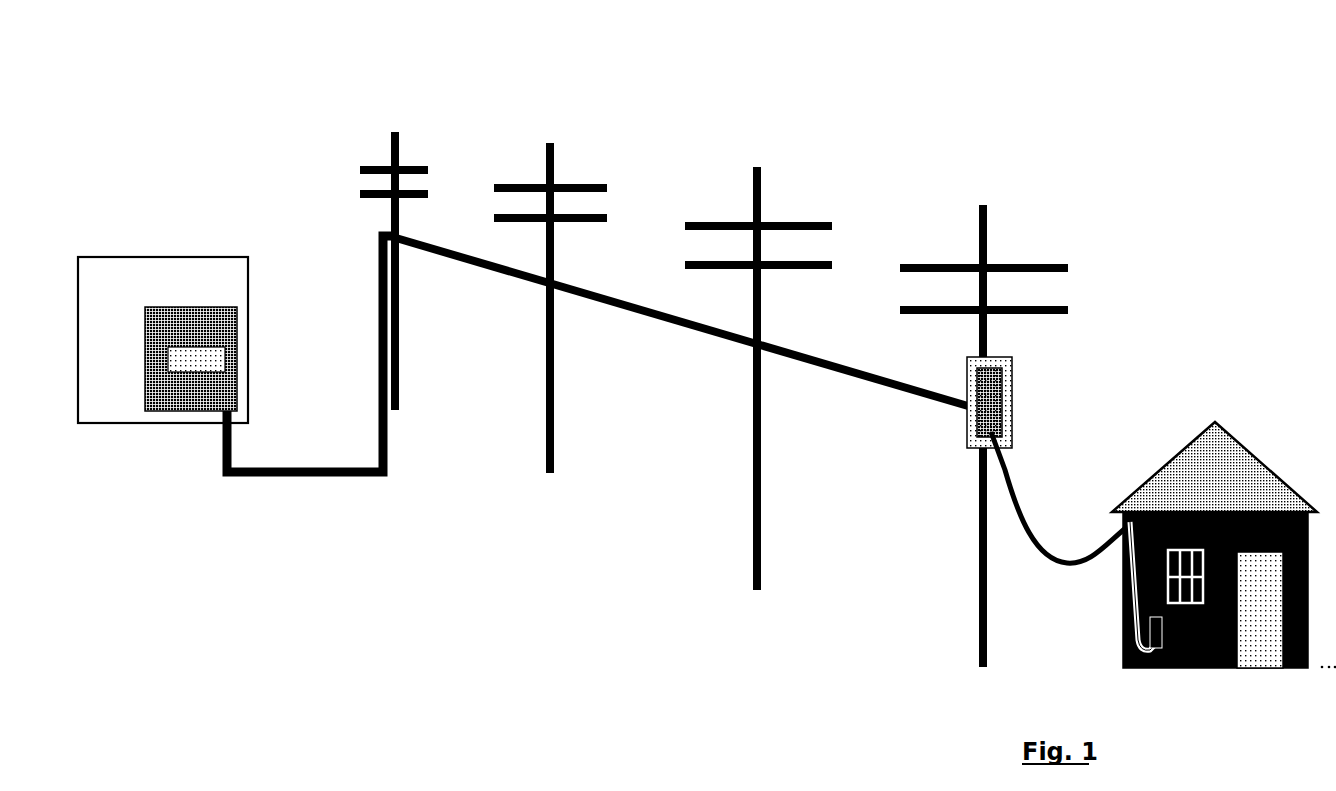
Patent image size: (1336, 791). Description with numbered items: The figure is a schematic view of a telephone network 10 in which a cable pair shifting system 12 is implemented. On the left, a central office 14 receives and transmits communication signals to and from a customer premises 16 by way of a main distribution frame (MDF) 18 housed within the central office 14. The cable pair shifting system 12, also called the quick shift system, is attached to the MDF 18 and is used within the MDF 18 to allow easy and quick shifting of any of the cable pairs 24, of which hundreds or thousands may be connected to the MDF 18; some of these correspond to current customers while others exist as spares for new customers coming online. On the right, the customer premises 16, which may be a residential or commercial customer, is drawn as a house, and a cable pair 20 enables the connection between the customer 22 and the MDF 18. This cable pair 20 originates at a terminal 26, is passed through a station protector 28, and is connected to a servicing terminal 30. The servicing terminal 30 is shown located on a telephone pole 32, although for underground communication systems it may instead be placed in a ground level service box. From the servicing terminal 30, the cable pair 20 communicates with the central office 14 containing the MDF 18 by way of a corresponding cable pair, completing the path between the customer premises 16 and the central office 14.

The telephone network 10 is at (963, 68).
The cable pair shifting system 12 is at (226, 356).
The central office 14 is at (249, 273).
The customer premises 16 is at (1224, 559).
The main distribution frame (MDF) 18 is at (237, 312).
The cable pair 20 is at (1037, 562).
The customer 22 is at (1166, 468).
The cable pairs 24 is at (654, 322).
The terminal 26 is at (1213, 672).
The station protector 28 is at (1168, 668).
The servicing terminal 30 is at (1014, 380).
The telephone pole 32 is at (988, 231).